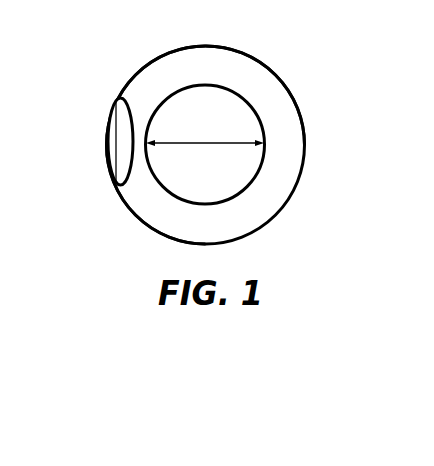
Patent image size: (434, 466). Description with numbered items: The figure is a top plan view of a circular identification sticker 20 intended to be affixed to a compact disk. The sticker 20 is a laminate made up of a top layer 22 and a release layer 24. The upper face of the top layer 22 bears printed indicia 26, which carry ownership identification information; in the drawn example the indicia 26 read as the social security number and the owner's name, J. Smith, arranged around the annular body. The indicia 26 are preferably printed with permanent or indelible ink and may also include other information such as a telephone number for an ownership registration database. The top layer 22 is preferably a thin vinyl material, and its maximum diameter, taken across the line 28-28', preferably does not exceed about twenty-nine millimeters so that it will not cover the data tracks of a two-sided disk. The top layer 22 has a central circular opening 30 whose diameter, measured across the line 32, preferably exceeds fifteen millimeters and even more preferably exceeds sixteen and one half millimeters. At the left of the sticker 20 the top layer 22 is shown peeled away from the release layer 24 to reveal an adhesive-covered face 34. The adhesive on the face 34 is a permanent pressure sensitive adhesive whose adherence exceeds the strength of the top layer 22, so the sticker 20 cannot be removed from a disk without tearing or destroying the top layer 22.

The circular identification sticker 20 is at (238, 52).
The top layer 22 is at (137, 92).
The release layer 24 is at (112, 133).
The printed indicia 26 is at (190, 62).
The line 28-28' 28 is at (129, 209).
The line 28- 28' is at (285, 88).
The central circular opening 30 is at (236, 193).
The line 32 is at (186, 143).
The adhesive-covered face 34 is at (121, 158).